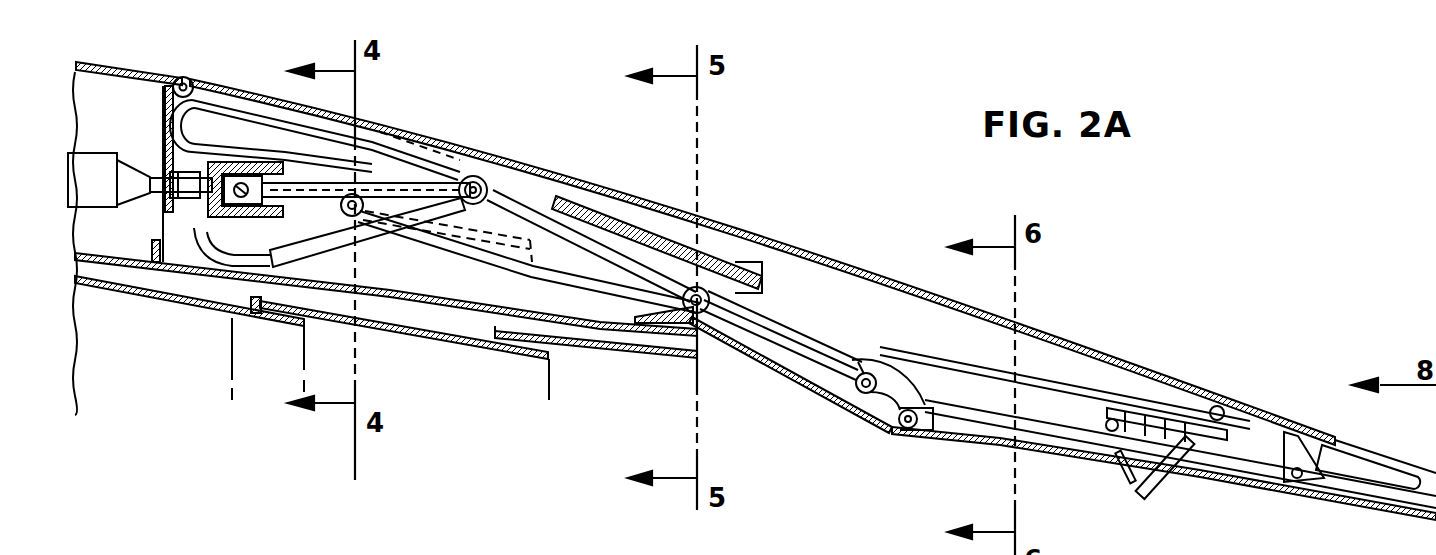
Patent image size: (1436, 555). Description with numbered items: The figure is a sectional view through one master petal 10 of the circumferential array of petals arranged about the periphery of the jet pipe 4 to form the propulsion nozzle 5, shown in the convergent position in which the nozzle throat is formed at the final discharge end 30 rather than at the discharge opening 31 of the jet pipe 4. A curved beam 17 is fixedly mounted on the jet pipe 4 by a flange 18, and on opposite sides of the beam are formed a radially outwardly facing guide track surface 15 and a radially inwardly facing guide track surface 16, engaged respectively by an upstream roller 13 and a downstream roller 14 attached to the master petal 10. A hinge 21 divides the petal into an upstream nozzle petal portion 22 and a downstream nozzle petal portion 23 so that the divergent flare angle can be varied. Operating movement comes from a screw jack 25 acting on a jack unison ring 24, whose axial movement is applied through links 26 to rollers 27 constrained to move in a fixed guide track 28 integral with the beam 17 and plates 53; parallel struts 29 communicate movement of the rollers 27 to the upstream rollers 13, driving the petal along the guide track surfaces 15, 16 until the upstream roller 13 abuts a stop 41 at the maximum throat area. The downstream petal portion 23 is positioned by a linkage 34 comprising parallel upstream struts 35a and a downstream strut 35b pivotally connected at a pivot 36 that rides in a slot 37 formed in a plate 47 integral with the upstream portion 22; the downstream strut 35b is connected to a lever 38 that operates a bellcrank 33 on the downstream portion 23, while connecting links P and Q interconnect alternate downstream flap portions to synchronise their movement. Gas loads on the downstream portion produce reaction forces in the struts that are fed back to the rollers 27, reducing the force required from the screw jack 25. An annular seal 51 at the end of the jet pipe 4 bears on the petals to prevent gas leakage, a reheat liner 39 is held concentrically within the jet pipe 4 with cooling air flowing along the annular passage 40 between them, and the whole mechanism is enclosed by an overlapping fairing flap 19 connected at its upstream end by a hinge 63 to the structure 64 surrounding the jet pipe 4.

The jet pipe 4 is at (418, 302).
The propulsion nozzle 5 is at (1112, 352).
The master petal 10 is at (997, 448).
The upstream roller 13 is at (355, 217).
The downstream roller 14 is at (724, 283).
The guide track surface 15 is at (285, 235).
The guide track surface 16 is at (517, 268).
The curved beam 17 is at (327, 265).
The flange 18 is at (192, 245).
The fairing flap 19 is at (838, 265).
The hinge 21 is at (905, 430).
The upstream nozzle petal portion 22 is at (787, 375).
The downstream nozzle petal portion 23 is at (1243, 486).
The jack unison ring 24 is at (192, 213).
The screw jack 25 is at (100, 158).
The link 26 is at (396, 205).
The roller 27 is at (483, 180).
The fixed guide track 28 is at (433, 158).
The parallel strut 29 is at (403, 222).
The final discharge end 30 is at (1433, 523).
The discharge opening 31 is at (700, 340).
The bellcrank 33 is at (1132, 398).
The linkage 34 is at (545, 205).
The upstream strut 35a is at (592, 212).
The downstream strut 35b is at (984, 362).
The pivot 36 is at (862, 392).
The slot 37 is at (780, 327).
The lever 38 is at (1235, 427).
The reheat liner 39 is at (568, 352).
The annular passage 40 is at (448, 336).
The stop 41 is at (200, 258).
The plate 47 is at (560, 265).
The annular seal 51 is at (677, 340).
The plate 53 is at (704, 287).
The hinge 63 is at (190, 82).
The structure 64 is at (118, 68).
The connecting link P is at (1127, 480).
The connecting link Q is at (1158, 490).